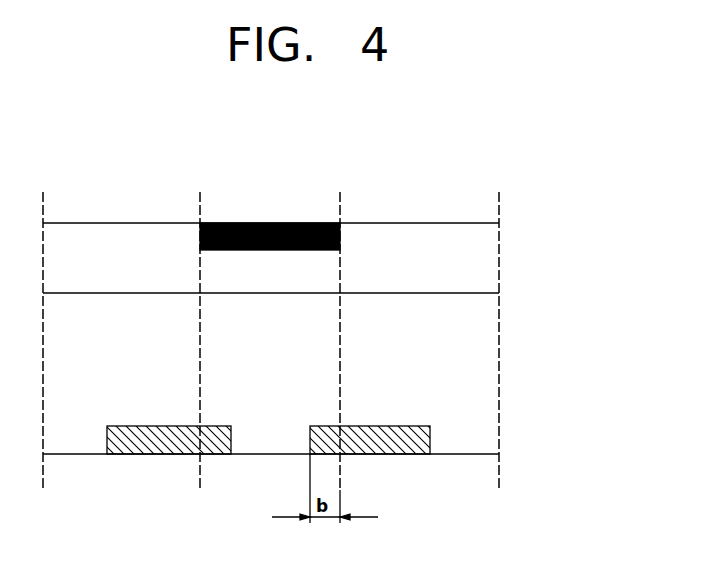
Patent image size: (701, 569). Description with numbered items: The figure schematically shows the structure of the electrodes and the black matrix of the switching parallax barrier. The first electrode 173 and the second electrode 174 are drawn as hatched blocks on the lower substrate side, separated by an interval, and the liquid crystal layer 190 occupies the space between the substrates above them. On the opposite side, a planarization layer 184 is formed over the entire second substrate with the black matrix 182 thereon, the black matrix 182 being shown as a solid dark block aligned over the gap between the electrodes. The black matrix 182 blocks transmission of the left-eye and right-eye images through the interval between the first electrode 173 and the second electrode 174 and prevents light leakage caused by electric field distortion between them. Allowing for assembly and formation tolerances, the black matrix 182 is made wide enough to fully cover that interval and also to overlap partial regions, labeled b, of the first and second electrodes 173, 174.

The black matrix 182 is at (266, 222).
The planarization layer 184 is at (495, 256).
The liquid crystal layer 190 is at (495, 375).
The second electrode 174 is at (148, 455).
The first electrode 173 is at (413, 455).